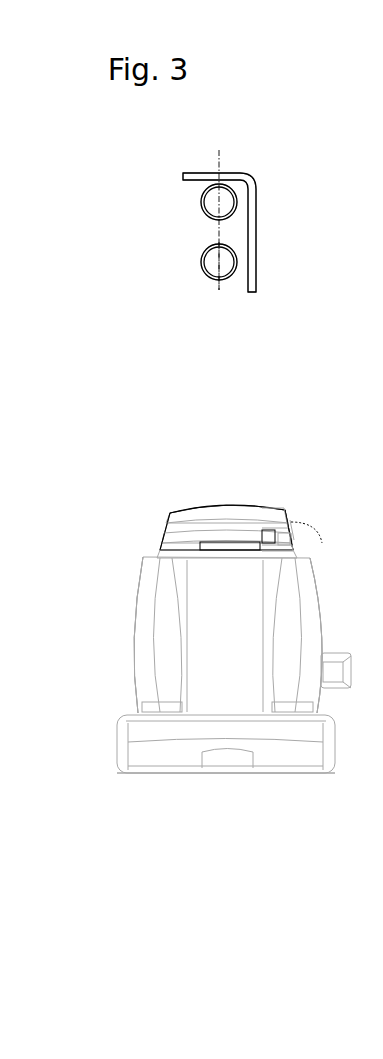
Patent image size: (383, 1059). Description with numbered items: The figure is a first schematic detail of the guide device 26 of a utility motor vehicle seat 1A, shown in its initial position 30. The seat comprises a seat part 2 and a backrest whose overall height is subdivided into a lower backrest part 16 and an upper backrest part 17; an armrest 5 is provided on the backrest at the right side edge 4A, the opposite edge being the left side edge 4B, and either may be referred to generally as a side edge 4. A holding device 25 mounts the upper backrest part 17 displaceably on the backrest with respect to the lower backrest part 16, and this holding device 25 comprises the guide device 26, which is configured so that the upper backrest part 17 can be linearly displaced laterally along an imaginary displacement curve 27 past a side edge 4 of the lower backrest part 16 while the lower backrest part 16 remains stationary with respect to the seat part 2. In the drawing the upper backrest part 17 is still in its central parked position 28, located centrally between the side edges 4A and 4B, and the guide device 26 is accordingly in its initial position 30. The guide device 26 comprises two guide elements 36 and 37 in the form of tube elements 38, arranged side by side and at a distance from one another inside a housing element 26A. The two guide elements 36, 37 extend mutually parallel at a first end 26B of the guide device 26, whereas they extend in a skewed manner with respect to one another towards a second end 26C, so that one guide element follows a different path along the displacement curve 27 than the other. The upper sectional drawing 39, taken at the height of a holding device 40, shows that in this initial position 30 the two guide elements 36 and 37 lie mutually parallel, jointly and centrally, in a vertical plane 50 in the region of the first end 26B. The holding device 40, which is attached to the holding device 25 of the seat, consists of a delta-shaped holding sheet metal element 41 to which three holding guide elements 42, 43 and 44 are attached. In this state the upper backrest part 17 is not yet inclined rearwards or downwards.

The utility motor vehicle seat 1A is at (280, 775).
The seat part 2 is at (134, 773).
The side edge 4 is at (256, 635).
The right side edge 4A is at (321, 619).
The left side edge 4B is at (133, 623).
The armrest 5 is at (347, 689).
The lower backrest part 16 is at (228, 635).
The upper backrest part 17 is at (102, 528).
The holding device 25 is at (214, 552).
The guide device 26 is at (218, 496).
The housing element 26A is at (252, 293).
The first end 26B is at (296, 476).
The second end 26C is at (174, 502).
The displacement curve 27 is at (322, 543).
The central parked position 28 is at (137, 477).
The initial position 30 is at (253, 127).
The guide element 36 is at (201, 202).
The guide element 37 is at (201, 265).
The tube element 38 is at (212, 288).
The sectional drawing 39 is at (120, 232).
The holding device 40 is at (305, 527).
The holding sheet metal element 41 is at (270, 546).
The holding guide element 42 is at (274, 516).
The holding guide element 43 is at (262, 533).
The holding guide element 44 is at (284, 537).
The vertical plane 50 is at (215, 161).